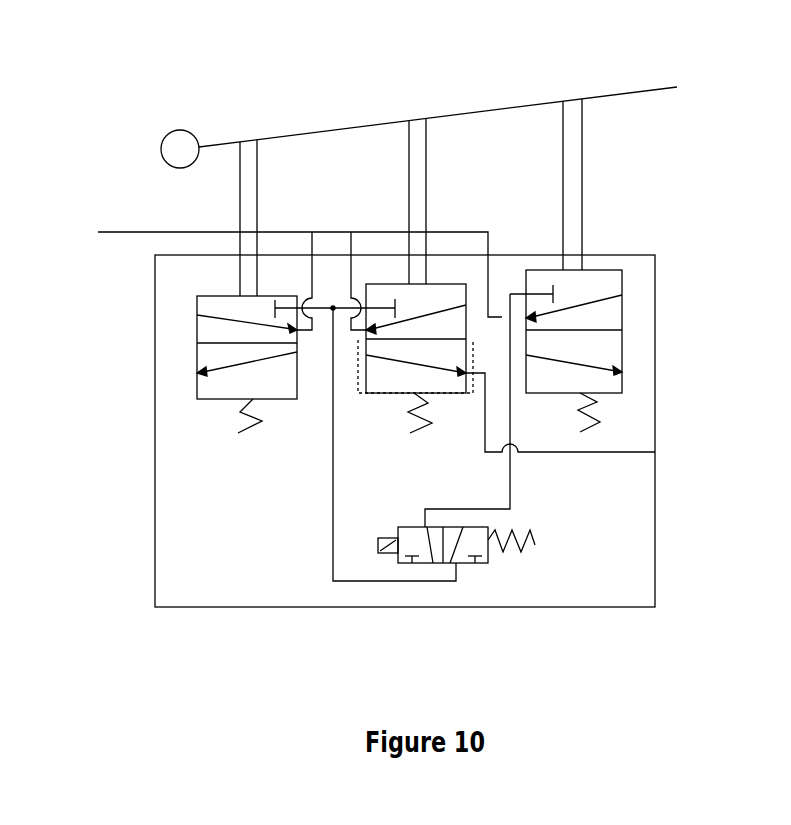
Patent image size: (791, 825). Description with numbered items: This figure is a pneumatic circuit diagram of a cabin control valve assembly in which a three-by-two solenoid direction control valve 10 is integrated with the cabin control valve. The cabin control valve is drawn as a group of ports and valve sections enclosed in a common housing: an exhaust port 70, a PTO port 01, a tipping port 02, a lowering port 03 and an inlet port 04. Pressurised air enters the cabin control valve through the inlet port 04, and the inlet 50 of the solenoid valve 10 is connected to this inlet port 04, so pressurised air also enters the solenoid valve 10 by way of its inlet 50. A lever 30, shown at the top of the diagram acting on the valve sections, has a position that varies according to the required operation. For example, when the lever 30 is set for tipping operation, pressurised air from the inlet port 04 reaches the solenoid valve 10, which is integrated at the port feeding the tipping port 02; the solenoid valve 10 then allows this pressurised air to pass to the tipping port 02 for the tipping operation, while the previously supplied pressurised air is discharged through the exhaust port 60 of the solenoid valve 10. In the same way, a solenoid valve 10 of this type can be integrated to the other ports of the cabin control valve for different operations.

The 3/2 solenoid valve 10 is at (413, 483).
The lever 30 is at (413, 151).
The exhaust port 70 is at (275, 269).
The PTO port 01 is at (197, 373).
The tipping port 02 is at (622, 372).
The lowering port 03 is at (655, 452).
The inlet of 3/2 solenoid valve 50 is at (425, 520).
The inlet port 04 is at (332, 581).
The exhaust port of solenoid valve 60 is at (456, 563).